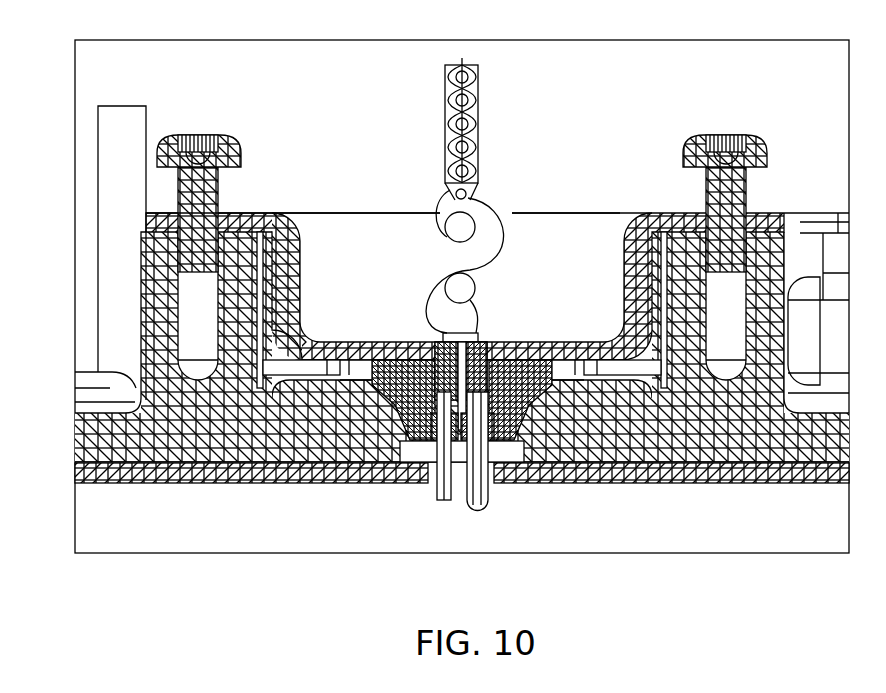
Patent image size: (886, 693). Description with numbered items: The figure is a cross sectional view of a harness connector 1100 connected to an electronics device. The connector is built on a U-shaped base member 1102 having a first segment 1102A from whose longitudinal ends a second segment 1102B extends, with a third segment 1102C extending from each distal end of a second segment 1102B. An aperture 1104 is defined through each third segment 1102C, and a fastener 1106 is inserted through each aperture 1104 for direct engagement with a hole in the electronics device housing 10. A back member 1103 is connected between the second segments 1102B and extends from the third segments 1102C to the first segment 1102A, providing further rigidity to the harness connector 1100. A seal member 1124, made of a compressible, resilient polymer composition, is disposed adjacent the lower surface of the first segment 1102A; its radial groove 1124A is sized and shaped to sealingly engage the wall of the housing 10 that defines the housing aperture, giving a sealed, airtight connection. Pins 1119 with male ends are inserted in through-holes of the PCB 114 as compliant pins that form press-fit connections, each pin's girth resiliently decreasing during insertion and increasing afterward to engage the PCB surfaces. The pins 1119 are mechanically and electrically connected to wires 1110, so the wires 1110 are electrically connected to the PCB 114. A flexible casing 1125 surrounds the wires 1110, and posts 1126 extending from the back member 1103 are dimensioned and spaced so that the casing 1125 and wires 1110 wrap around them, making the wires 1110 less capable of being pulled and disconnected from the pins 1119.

The electronics device housing 10 is at (152, 345).
The PCB 114 is at (642, 482).
The harness connector 1100 is at (606, 105).
The U-shaped base member 1102 is at (497, 245).
The first segment 1102A is at (330, 340).
The second segment 1102B is at (292, 280).
The third segment 1102C is at (297, 180).
The back member 1103 is at (523, 226).
The aperture 1104 is at (162, 214).
The fastener 1106 is at (197, 137).
The wires 1110 is at (472, 160).
The pins 1119 is at (478, 510).
The seal member 1124 is at (407, 400).
The radial groove 1124A is at (518, 398).
The casing 1125 is at (445, 120).
The posts 1126 is at (443, 225).